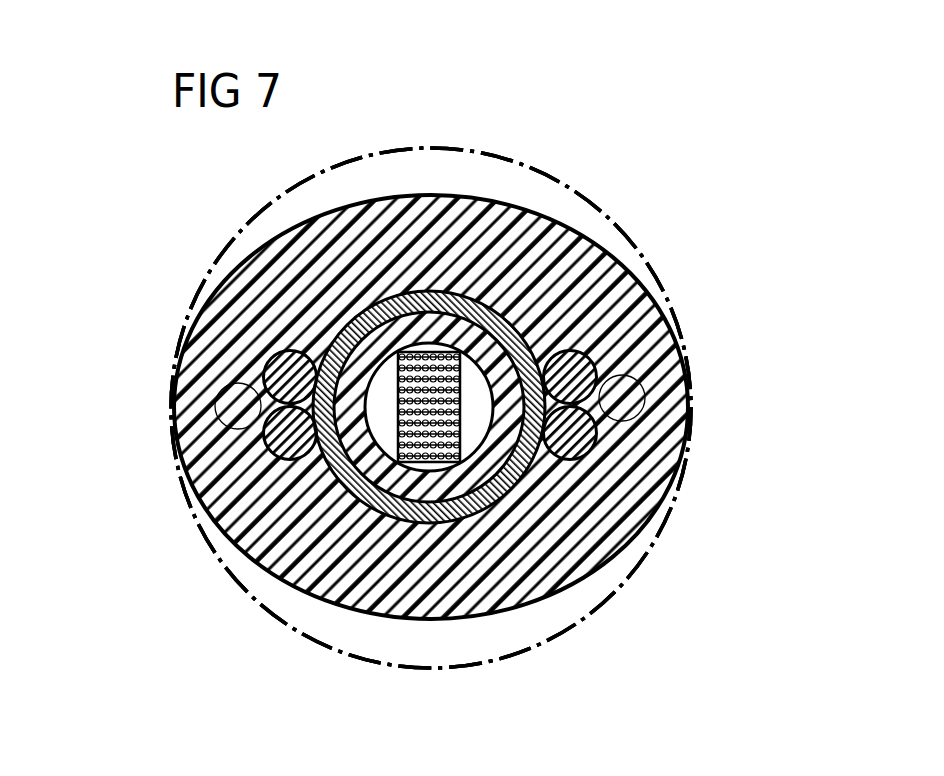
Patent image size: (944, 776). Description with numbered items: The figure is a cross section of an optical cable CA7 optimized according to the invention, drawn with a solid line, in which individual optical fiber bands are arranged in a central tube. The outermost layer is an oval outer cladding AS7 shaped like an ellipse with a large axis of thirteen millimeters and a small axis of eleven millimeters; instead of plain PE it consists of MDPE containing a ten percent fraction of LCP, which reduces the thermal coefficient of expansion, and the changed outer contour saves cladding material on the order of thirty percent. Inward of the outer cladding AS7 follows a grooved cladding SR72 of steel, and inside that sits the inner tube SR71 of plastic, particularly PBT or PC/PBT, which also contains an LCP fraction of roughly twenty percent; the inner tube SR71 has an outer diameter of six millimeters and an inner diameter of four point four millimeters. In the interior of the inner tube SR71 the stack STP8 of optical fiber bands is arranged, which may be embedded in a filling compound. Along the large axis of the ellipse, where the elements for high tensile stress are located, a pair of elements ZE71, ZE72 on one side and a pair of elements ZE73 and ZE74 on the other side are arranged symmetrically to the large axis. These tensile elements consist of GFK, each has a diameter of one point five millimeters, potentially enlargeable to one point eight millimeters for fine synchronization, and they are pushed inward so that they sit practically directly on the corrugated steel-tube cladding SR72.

The optical cable CA7 is at (622, 230).
The outer cladding AS7 is at (543, 213).
The inner tube SR71 is at (500, 453).
The grooved cladding SR72 is at (520, 472).
The stack of optical fiber bands STP8 is at (435, 440).
The element for high tensile stresses ZE71 is at (264, 434).
The element for high tensile stresses ZE72 is at (264, 377).
The element for high tensile stresses ZE73 is at (598, 378).
The element for high tensile stresses ZE74 is at (598, 433).